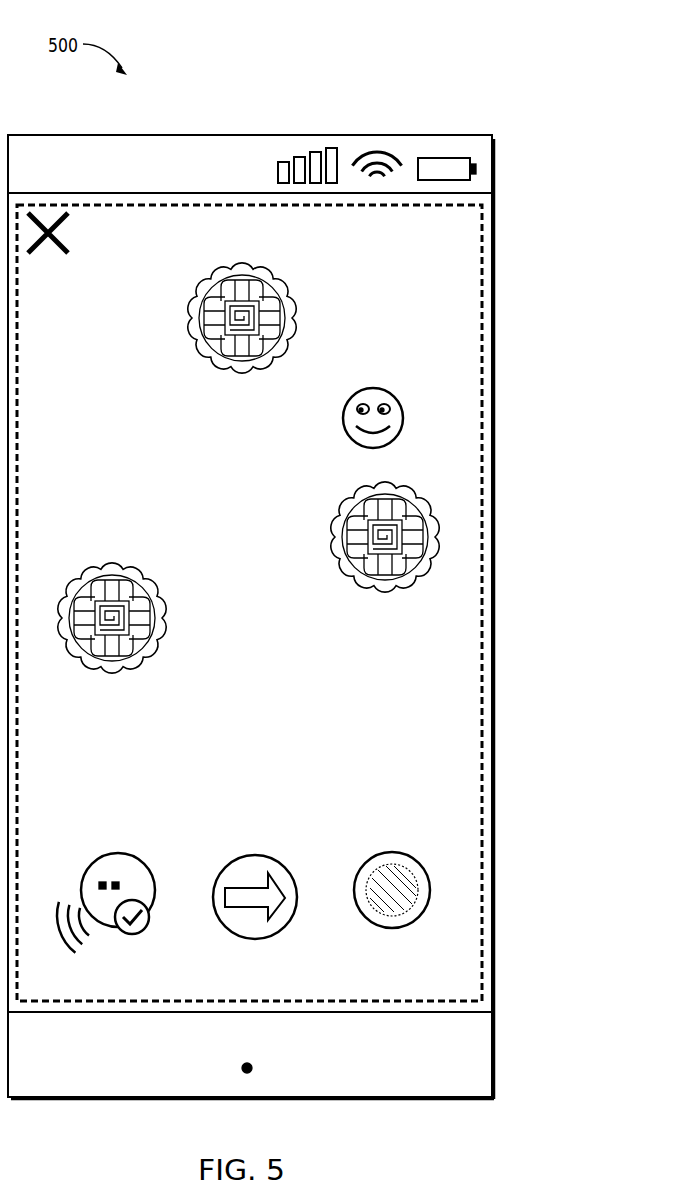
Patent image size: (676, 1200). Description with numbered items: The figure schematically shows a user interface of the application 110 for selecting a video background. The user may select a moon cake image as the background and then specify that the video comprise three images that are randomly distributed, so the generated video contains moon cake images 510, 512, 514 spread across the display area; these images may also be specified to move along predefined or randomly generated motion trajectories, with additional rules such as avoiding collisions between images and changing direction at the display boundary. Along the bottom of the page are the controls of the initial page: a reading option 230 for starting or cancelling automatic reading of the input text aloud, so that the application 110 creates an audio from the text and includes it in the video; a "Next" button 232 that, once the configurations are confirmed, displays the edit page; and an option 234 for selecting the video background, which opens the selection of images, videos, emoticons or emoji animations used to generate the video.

The application 110 is at (313, 135).
The image 510 is at (237, 263).
The second mooncake graphic element 512 is at (108, 565).
The third mooncake graphic element 514 is at (383, 483).
The reading option 230 is at (118, 853).
The "Next" button 232 is at (255, 855).
The option for selecting a video background 234 is at (392, 852).